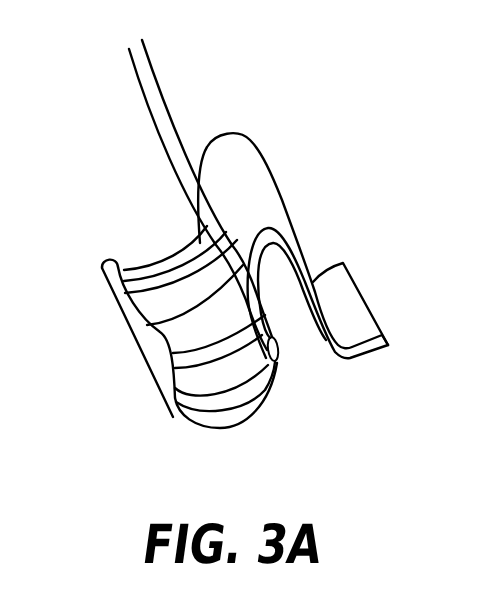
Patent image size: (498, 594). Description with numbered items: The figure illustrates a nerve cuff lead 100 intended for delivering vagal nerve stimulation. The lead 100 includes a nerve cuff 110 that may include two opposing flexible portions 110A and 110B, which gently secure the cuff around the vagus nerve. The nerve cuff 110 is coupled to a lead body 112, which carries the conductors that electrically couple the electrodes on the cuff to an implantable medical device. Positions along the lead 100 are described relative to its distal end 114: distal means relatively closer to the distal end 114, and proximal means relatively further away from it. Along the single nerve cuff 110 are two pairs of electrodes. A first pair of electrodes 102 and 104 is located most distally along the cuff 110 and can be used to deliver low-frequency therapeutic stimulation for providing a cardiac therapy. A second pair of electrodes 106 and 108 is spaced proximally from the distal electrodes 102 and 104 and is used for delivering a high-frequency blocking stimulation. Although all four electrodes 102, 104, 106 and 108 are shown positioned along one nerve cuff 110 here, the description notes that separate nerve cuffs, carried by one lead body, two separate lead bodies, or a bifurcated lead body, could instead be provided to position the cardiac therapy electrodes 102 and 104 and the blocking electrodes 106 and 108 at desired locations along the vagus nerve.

The nerve cuff lead 100 is at (247, 41).
The electrode 102 is at (186, 398).
The electrode 104 is at (172, 360).
The electrode 106 is at (172, 324).
The electrode 108 is at (133, 278).
The nerve cuff 110 is at (175, 234).
The flexible portion 110A is at (225, 428).
The flexible portion 110B is at (350, 358).
The lead body 112 is at (138, 90).
The distal end 114 is at (279, 347).